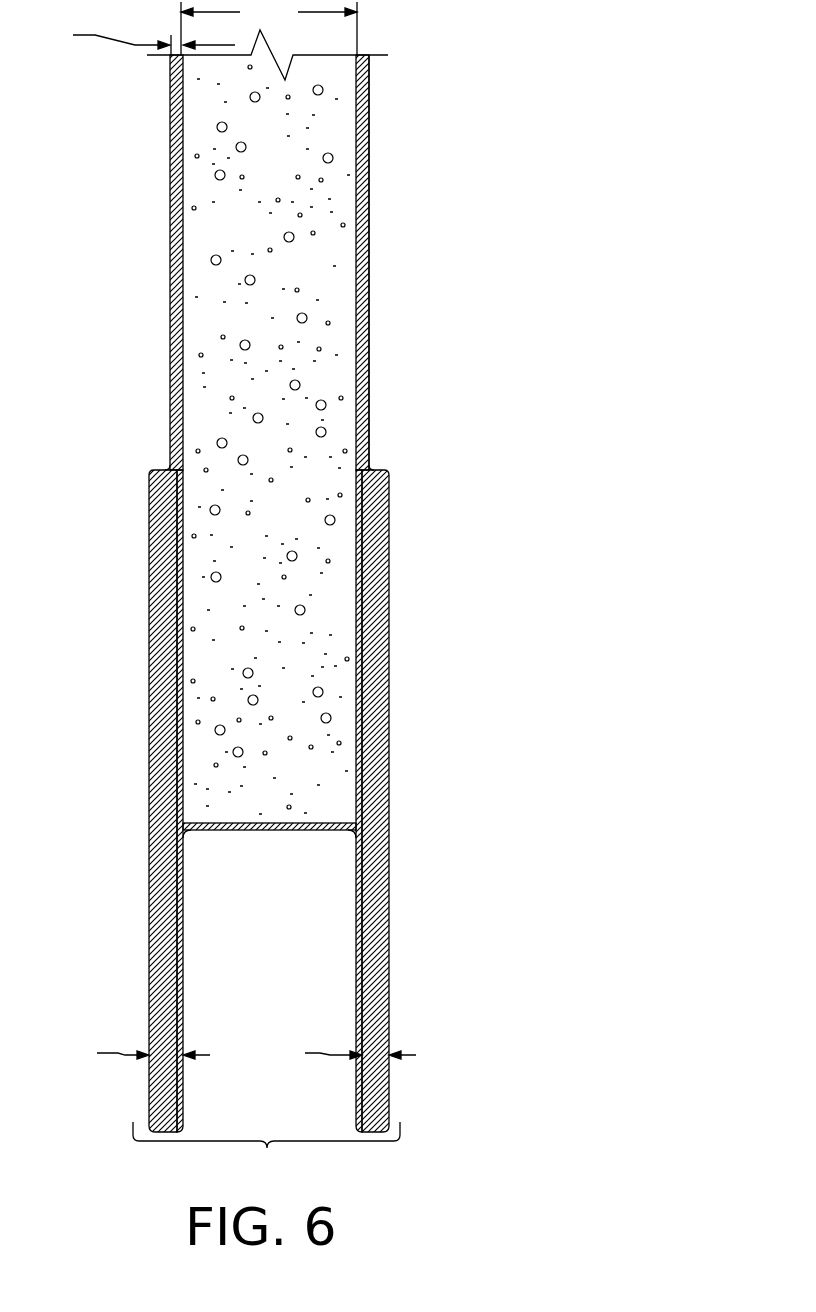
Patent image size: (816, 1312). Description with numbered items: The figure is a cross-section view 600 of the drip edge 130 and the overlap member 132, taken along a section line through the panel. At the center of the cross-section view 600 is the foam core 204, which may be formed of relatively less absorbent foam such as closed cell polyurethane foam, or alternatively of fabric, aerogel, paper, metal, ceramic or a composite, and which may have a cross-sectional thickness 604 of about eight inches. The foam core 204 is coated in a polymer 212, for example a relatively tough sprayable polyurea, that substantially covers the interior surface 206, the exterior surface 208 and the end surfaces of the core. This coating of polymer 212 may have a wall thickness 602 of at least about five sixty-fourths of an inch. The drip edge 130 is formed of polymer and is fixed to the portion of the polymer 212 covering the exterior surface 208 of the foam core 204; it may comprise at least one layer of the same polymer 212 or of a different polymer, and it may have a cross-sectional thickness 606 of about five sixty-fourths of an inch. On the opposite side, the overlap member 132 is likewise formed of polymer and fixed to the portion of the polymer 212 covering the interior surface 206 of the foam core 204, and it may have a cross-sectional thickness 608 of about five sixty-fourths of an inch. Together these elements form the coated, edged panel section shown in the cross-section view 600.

The cross-section view 600 is at (266, 1149).
The wall thickness 602 is at (136, 39).
The cross-sectional thickness 604 is at (269, 28).
The cross-sectional thickness 606 is at (343, 1053).
The cross-sectional thickness 608 is at (136, 1053).
The drip edge 130 is at (389, 1003).
The overlap member 132 is at (150, 1003).
The foam core 204 is at (308, 347).
The interior surface 206 is at (170, 395).
The exterior surface 208 is at (369, 386).
The polymer 212 is at (369, 301).